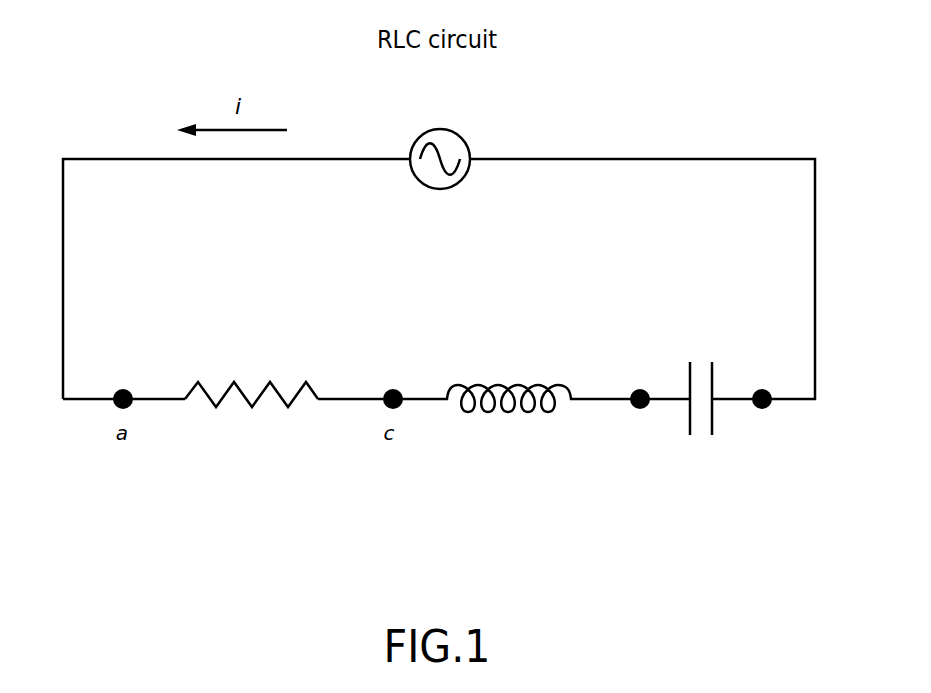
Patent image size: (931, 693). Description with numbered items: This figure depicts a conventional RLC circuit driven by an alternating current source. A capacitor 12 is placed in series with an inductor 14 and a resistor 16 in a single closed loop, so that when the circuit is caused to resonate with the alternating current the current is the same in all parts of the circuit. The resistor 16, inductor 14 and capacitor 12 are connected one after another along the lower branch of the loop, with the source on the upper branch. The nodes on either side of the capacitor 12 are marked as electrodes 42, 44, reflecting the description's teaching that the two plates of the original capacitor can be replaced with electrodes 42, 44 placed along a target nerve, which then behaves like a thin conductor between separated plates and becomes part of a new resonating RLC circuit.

The capacitor 12 is at (730, 467).
The inductor 14 is at (556, 447).
The resistor 16 is at (296, 448).
The electrode 42 is at (638, 392).
The electrode 44 is at (760, 392).